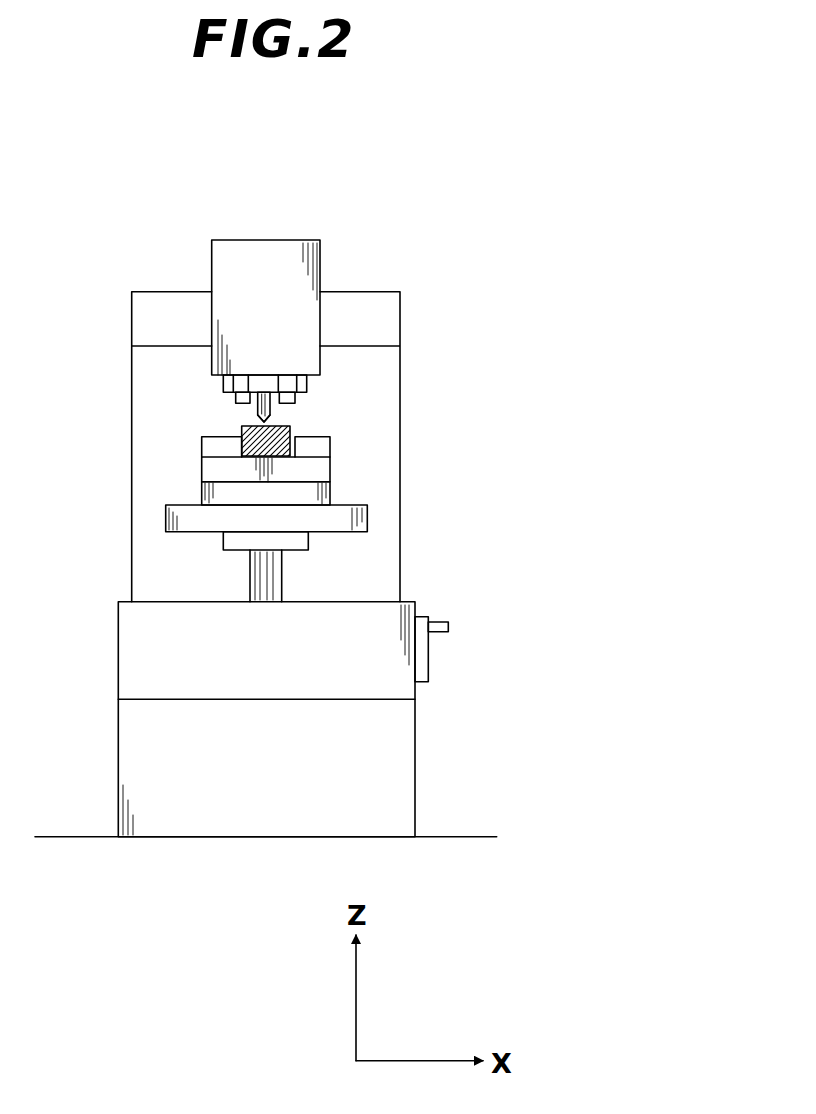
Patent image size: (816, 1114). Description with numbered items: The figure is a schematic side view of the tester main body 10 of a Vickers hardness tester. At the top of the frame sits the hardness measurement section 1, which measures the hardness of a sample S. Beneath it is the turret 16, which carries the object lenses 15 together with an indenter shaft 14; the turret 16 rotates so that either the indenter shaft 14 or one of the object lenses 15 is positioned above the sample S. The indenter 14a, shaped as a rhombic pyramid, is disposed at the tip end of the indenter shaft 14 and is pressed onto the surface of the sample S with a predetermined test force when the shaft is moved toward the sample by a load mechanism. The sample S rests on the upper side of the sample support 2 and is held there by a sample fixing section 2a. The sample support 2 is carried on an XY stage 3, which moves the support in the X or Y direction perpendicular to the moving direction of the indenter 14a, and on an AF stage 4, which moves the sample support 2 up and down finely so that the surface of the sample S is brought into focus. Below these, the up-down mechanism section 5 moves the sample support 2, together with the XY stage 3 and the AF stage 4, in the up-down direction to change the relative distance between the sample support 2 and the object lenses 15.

The tester main body 10 is at (433, 203).
The hardness measurement section 1 is at (321, 253).
The turret 16 is at (307, 385).
The object lenses 15 is at (236, 397).
The indenter shaft 14 is at (270, 400).
The indenter 14a is at (266, 419).
The sample S is at (283, 448).
The sample fixing section 2a is at (202, 440).
The sample support 2 is at (202, 472).
The AF stage 4 is at (330, 483).
The XY stage 3 is at (167, 512).
The up-down mechanism section 5 is at (252, 542).